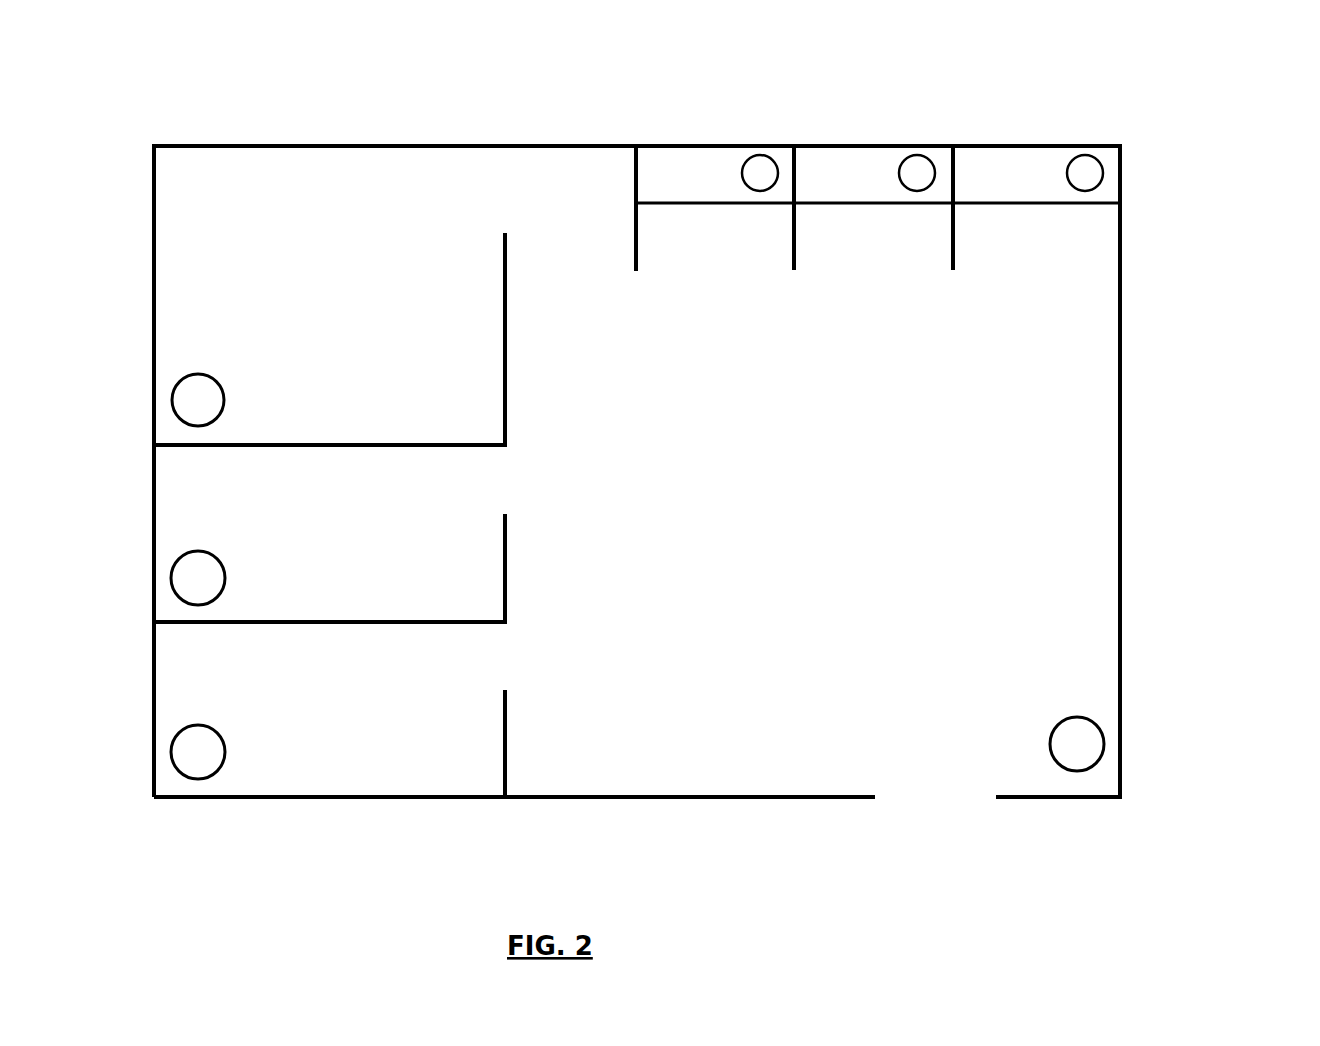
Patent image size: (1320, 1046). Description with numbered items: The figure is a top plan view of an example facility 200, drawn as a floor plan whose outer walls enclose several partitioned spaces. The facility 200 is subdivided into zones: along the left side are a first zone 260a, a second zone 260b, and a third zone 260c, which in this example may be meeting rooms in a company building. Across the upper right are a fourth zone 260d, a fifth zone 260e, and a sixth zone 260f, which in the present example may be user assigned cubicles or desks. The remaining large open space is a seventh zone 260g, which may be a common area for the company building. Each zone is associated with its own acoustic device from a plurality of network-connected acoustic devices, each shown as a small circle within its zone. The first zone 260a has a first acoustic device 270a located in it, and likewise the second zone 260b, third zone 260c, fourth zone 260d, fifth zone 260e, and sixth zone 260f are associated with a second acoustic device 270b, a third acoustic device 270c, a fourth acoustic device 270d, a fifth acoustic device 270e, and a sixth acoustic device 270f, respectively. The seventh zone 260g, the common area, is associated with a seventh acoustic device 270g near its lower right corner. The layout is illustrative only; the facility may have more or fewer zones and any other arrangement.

The facility 200 is at (1203, 138).
The first zone 260a is at (418, 743).
The second zone 260b is at (329, 568).
The third zone 260c is at (329, 339).
The fourth zone 260d is at (715, 208).
The fifth zone 260e is at (873, 208).
The sixth zone 260f is at (1036, 226).
The seventh zone 260g is at (782, 429).
The first acoustic device 270a is at (198, 748).
The second acoustic device 270b is at (198, 572).
The third acoustic device 270c is at (202, 396).
The fourth acoustic device 270d is at (759, 172).
The fifth acoustic device 270e is at (916, 172).
The sixth acoustic device 270f is at (1084, 172).
The seventh acoustic device 270g is at (1072, 739).